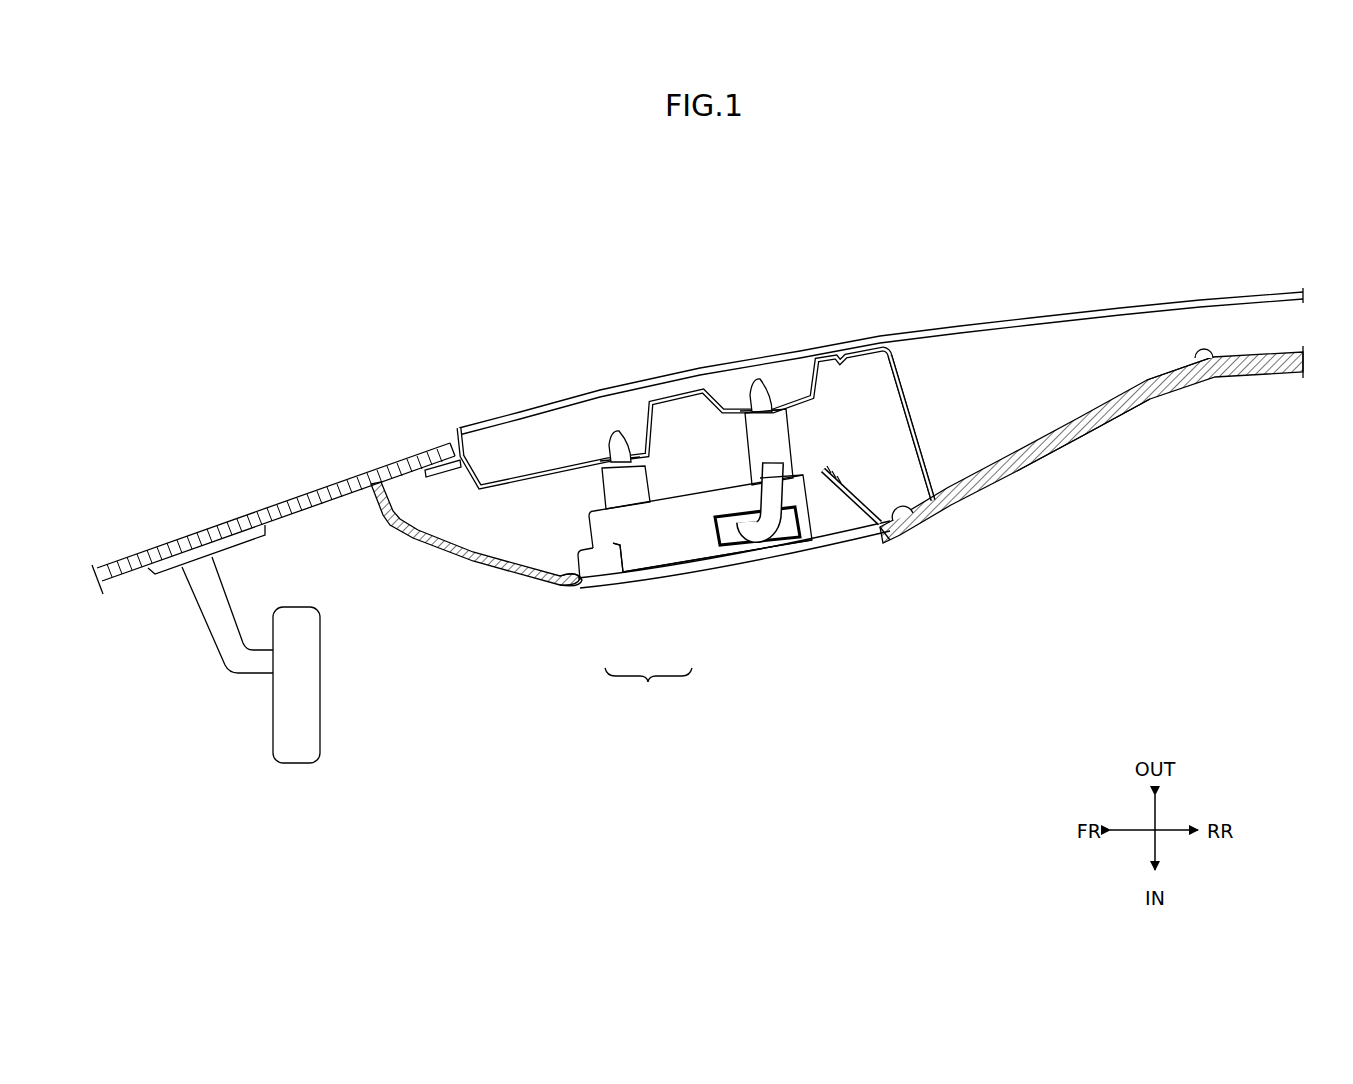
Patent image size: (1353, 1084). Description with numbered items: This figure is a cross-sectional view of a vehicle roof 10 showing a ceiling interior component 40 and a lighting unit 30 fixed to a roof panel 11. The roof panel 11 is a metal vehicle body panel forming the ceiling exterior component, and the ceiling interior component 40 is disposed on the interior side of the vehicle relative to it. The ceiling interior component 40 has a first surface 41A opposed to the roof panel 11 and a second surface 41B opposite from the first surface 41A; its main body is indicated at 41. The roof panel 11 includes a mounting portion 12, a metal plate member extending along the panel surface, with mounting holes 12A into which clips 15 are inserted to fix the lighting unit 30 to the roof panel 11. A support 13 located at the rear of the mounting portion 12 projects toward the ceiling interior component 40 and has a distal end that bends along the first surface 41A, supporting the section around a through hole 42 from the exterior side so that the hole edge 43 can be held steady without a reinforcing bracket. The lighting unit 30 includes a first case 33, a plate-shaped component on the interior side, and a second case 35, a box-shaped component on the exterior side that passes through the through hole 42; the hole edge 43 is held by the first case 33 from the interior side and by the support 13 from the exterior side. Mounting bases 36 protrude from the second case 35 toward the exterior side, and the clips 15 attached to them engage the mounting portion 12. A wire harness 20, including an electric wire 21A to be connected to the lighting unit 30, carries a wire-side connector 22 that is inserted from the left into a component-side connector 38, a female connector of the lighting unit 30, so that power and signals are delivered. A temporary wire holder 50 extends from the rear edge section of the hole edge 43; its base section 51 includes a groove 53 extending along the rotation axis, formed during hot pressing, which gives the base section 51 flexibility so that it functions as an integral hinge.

The vehicle roof 10 is at (1220, 278).
The roof panel 11 is at (1134, 306).
The mounting portion 12 is at (815, 382).
The mounting holes 12A is at (607, 457).
The support 13 is at (920, 437).
The clips 15 is at (618, 435).
The wire harness 20 is at (810, 532).
The electric wire 21A is at (778, 493).
The wire-side connector 22 is at (780, 540).
The lighting unit 30 is at (648, 689).
The first case 33 is at (667, 585).
The second case 35 is at (607, 532).
The mounting bases 36 is at (612, 485).
The component-side connector 38 is at (726, 528).
The ceiling interior component 40 is at (1272, 392).
The panel main body 41 is at (1124, 413).
The first surface 41A is at (1214, 368).
The second surface 41B is at (1174, 395).
The through hole 42 is at (588, 590).
The hole edge 43 is at (912, 526).
The temporary wire holder 50 is at (868, 487).
The base section 51 is at (890, 530).
The groove 53 is at (937, 530).